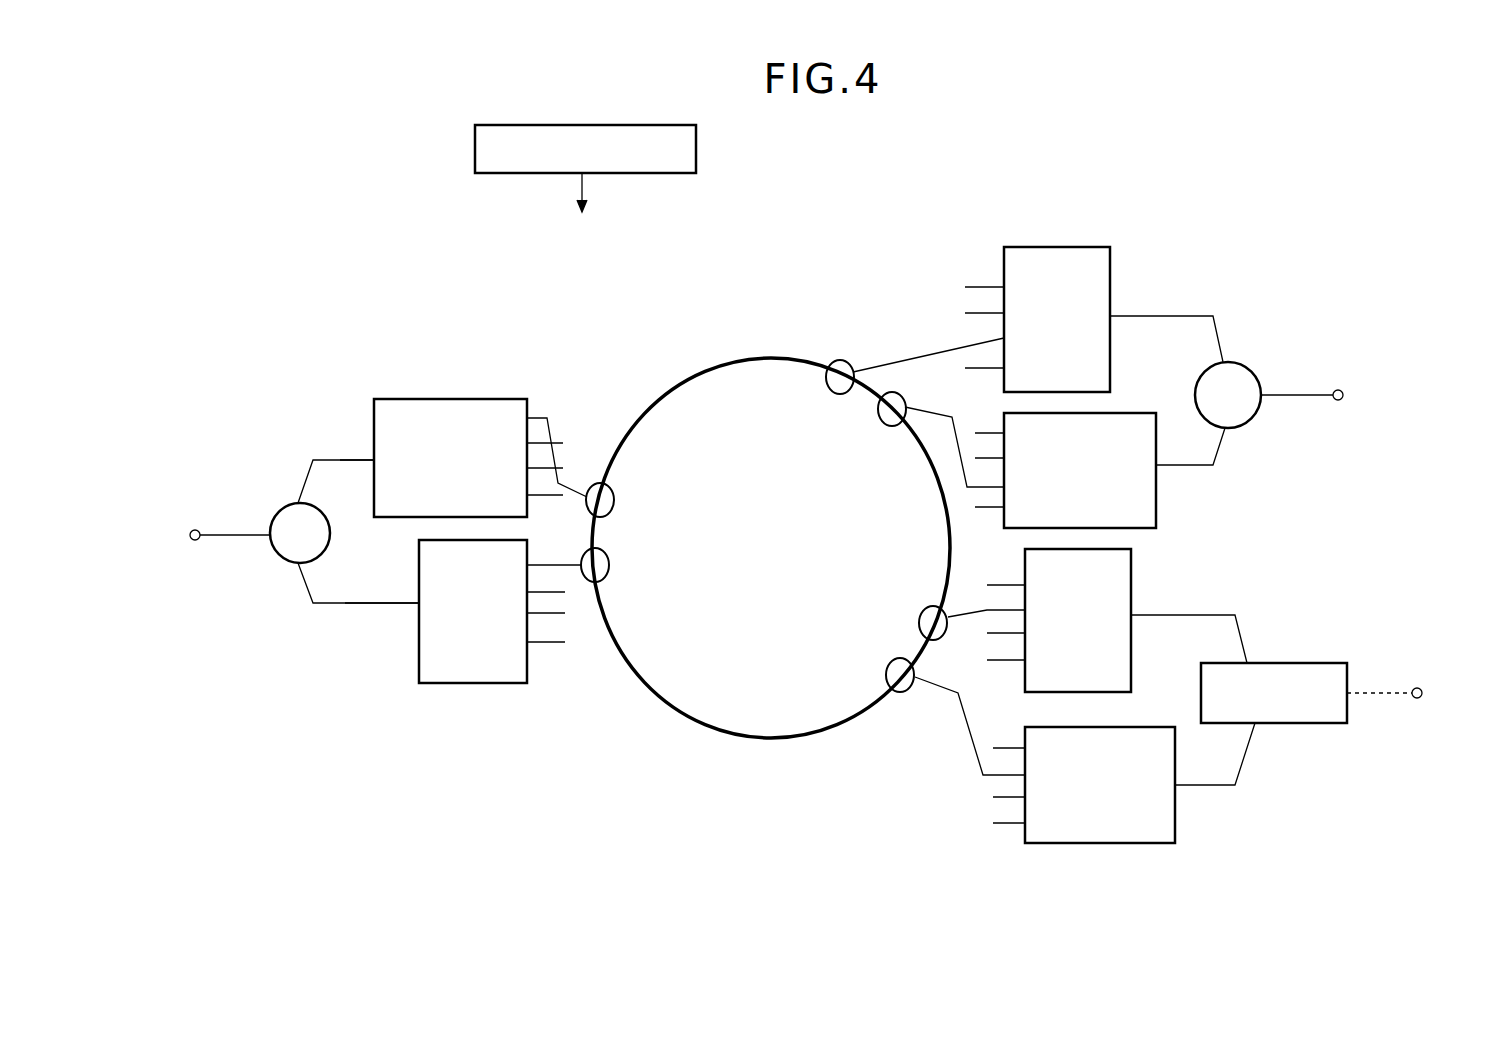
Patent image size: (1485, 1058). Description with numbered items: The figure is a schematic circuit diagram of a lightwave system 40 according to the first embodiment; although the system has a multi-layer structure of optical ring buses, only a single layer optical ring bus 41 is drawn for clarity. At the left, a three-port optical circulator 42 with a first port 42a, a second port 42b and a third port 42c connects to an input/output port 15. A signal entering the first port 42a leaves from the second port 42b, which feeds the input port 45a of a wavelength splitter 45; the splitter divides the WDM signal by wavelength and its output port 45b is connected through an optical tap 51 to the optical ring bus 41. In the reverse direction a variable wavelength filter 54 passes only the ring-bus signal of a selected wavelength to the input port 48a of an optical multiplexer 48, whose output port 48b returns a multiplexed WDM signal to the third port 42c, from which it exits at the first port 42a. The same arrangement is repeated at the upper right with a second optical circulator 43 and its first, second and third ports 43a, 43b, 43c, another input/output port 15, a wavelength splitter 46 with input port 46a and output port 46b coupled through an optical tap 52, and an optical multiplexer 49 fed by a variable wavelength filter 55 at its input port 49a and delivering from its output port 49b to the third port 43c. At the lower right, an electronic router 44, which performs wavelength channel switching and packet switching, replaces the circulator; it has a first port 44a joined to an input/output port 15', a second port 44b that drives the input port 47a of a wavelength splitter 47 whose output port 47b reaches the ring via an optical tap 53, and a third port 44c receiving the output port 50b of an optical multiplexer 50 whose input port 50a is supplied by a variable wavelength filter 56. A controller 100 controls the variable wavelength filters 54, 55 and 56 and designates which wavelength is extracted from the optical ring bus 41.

The controller 100 is at (696, 148).
The lightwave system 40 is at (430, 300).
The optical ring bus 41 is at (745, 358).
The input/output port 15 is at (775, 437).
The input/output port 15' is at (1441, 712).
The optical circulator 42 is at (275, 558).
The first port 42a is at (240, 540).
The second port 42b is at (302, 587).
The third port 42c is at (303, 477).
The wavelength splitter 45 is at (500, 683).
The input port 45a is at (345, 603).
The output port 45b is at (553, 642).
The optical multiplexer 48 is at (515, 399).
The input port 48a is at (537, 417).
The output port 48b is at (340, 460).
The optical tap 51 is at (609, 565).
The optical tap 52 is at (829, 385).
The optical tap 53 is at (920, 612).
The variable wavelength filter 54 is at (614, 500).
The variable wavelength filter 55 is at (887, 427).
The variable wavelength filter 56 is at (888, 667).
The wavelength splitter 46 is at (1062, 247).
The input port 46a is at (1185, 316).
The output port 46b is at (985, 287).
The optical multiplexer 49 is at (1140, 413).
The input port 49a is at (988, 433).
The output port 49b is at (1165, 465).
The optical circulator 43 is at (1255, 372).
The first port 43a is at (1285, 397).
The second port 43b is at (1222, 340).
The third port 43c is at (1228, 443).
The wavelength splitter 47 is at (1131, 563).
The input port 47a is at (1205, 615).
The output port 47b is at (1007, 665).
The electronic router 44 is at (1323, 663).
The first port 44a is at (1385, 690).
The second port 44b is at (1245, 645).
The third port 44c is at (1255, 728).
The optical multiplexer 50 is at (1093, 843).
The input port 50a is at (1003, 825).
The output port 50b is at (1205, 787).